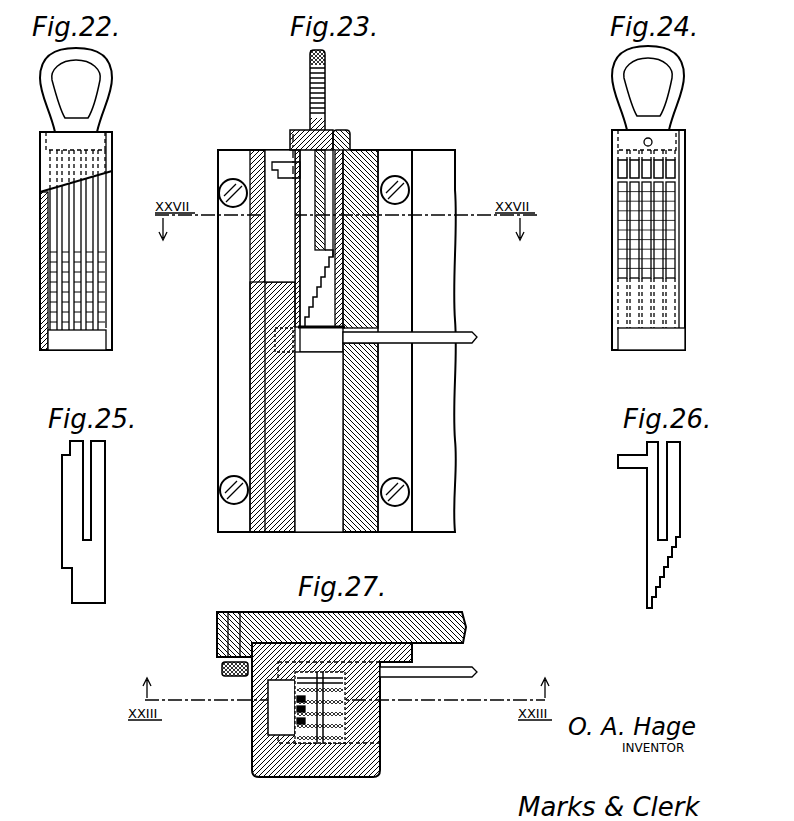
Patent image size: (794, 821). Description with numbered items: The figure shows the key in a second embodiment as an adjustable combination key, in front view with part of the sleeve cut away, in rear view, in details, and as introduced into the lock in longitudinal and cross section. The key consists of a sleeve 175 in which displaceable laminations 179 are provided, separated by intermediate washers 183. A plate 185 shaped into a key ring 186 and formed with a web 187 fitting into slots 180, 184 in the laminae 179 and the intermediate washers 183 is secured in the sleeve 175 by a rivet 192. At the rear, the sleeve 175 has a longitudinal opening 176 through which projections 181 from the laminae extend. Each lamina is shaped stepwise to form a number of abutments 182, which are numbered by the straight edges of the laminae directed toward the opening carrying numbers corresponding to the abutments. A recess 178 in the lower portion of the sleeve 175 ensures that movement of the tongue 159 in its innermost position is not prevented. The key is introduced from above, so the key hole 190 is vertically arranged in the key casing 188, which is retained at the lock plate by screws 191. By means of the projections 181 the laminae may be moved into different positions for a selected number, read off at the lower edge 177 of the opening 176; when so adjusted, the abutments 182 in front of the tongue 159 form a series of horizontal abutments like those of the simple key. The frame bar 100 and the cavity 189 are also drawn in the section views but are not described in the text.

In FIG. 27, the frame bar 100 is at (455, 623).
In FIG. 23, the tongue 159 is at (466, 338).
In FIG. 27, the tongue 159 is at (470, 672).
In FIG. 22, the sleeve 175 is at (107, 192).
In FIG. 23, the sleeve 175 is at (293, 307).
In FIG. 24, the sleeve 175 is at (622, 300).
In FIG. 27, the sleeve 175 is at (333, 763).
In FIG. 23, the longitudinal opening 176 is at (298, 240).
In FIG. 27, the longitudinal opening 176 is at (295, 720).
In FIG. 24, the lower edge 177 is at (648, 280).
In FIG. 22, the recess 178 is at (107, 343).
In FIG. 24, the recess 178 is at (618, 340).
In FIG. 23, the laminations 179 is at (328, 227).
In FIG. 26, the laminations 179 is at (673, 512).
In FIG. 27, the laminations 179 is at (295, 710).
In FIG. 26, the slots 180 is at (662, 467).
In FIG. 23, the projections 181 is at (278, 172).
In FIG. 24, the projections 181 is at (668, 170).
In FIG. 26, the projections 181 is at (637, 460).
In FIG. 23, the abutments 182 is at (323, 282).
In FIG. 26, the abutments 182 is at (672, 563).
In FIG. 23, the intermediate washers 183 is at (323, 303).
In FIG. 25, the intermediate washers 183 is at (68, 543).
In FIG. 27, the intermediate washers 183 is at (294, 702).
In FIG. 25, the slots 184 is at (87, 482).
In FIG. 23, the plate 185 is at (293, 137).
In FIG. 23, the key ring 186 is at (325, 84).
In FIG. 23, the web 187 is at (320, 166).
In FIG. 27, the web 187 is at (345, 718).
In FIG. 23, the key casing 188 is at (365, 422).
In FIG. 27, the key casing 188 is at (273, 763).
In FIG. 23, the cavity 189 is at (280, 271).
In FIG. 27, the cavity 189 is at (277, 692).
In FIG. 23, the key hole 190 is at (298, 425).
In FIG. 23, the screws 191 is at (397, 497).
In FIG. 27, the screws 191 is at (222, 668).
In FIG. 23, the rivet 192 is at (342, 131).
In FIG. 24, the rivet 192 is at (652, 140).